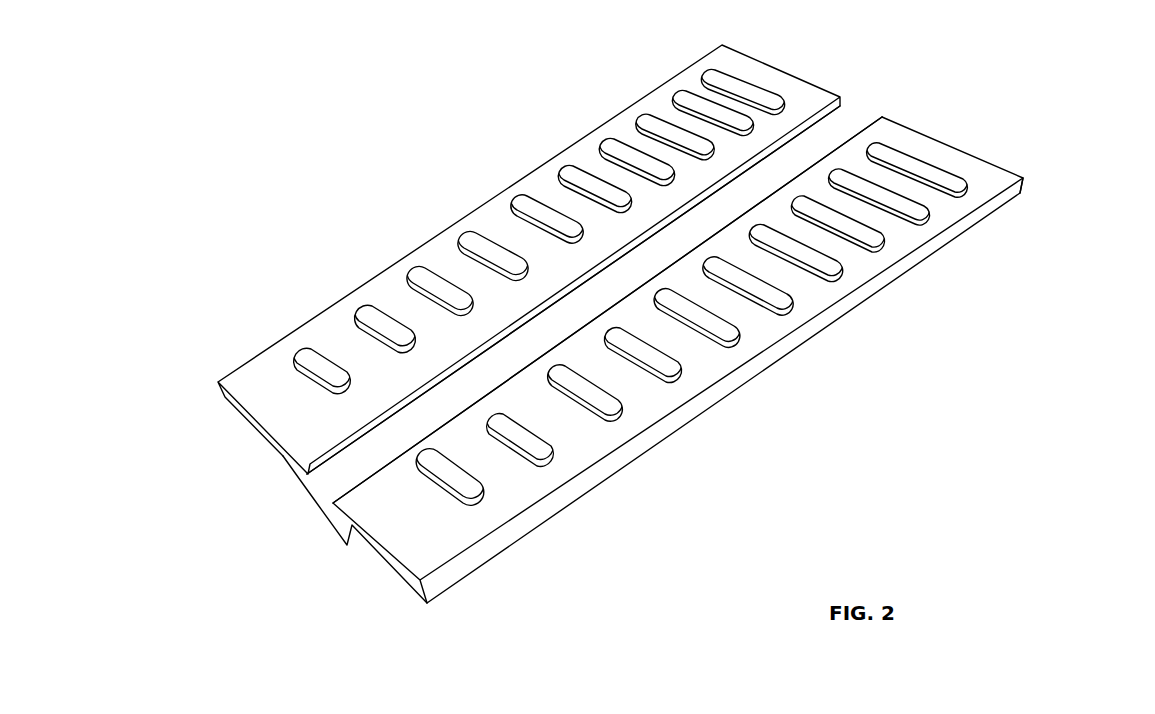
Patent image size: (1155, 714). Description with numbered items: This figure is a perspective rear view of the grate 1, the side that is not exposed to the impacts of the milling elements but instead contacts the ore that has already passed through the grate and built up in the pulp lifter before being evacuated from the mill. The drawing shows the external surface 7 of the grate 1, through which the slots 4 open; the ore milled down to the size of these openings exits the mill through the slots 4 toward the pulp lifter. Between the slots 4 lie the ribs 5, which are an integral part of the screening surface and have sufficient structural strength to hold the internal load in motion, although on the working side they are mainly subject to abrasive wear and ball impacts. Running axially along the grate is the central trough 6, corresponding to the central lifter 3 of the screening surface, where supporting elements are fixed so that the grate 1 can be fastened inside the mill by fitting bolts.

The grate 1 is at (638, 324).
The central lifter 3 is at (325, 513).
The slots 4 is at (760, 293).
The ribs 5 is at (701, 360).
The central trough 6 is at (845, 115).
The external surface 7 is at (937, 150).